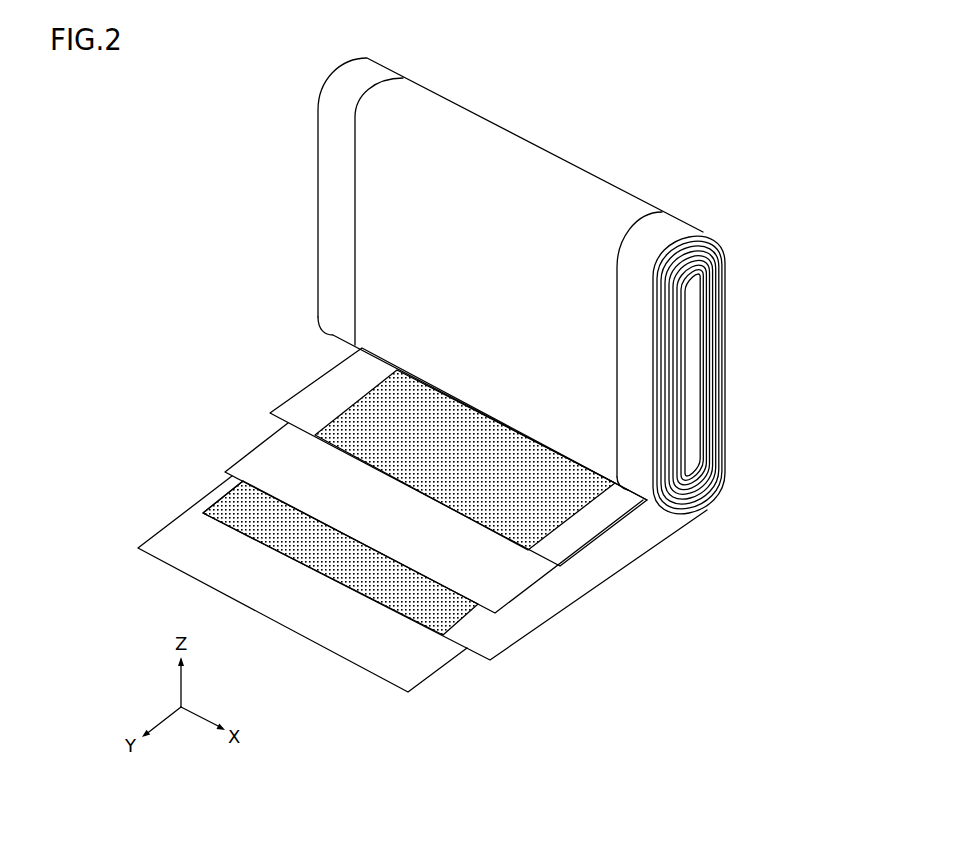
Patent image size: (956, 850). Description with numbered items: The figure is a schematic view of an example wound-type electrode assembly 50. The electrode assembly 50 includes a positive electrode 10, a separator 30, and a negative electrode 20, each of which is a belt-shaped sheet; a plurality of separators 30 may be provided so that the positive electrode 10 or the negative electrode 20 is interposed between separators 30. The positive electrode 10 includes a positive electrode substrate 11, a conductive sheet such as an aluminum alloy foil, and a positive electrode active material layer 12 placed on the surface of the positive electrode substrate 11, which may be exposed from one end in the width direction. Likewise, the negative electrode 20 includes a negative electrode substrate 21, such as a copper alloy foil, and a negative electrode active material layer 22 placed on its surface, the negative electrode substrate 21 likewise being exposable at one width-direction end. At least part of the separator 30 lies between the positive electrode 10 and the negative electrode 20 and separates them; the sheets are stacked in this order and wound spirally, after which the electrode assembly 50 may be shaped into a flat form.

The positive electrode 10 is at (426, 449).
The positive electrode substrate 11 is at (347, 377).
The positive electrode active material layer 12 is at (362, 423).
The negative electrode 20 is at (455, 612).
The negative electrode substrate 21 is at (557, 590).
The negative electrode active material layer 22 is at (420, 602).
The separator 30 is at (190, 547).
The electrode assembly 50 is at (699, 177).